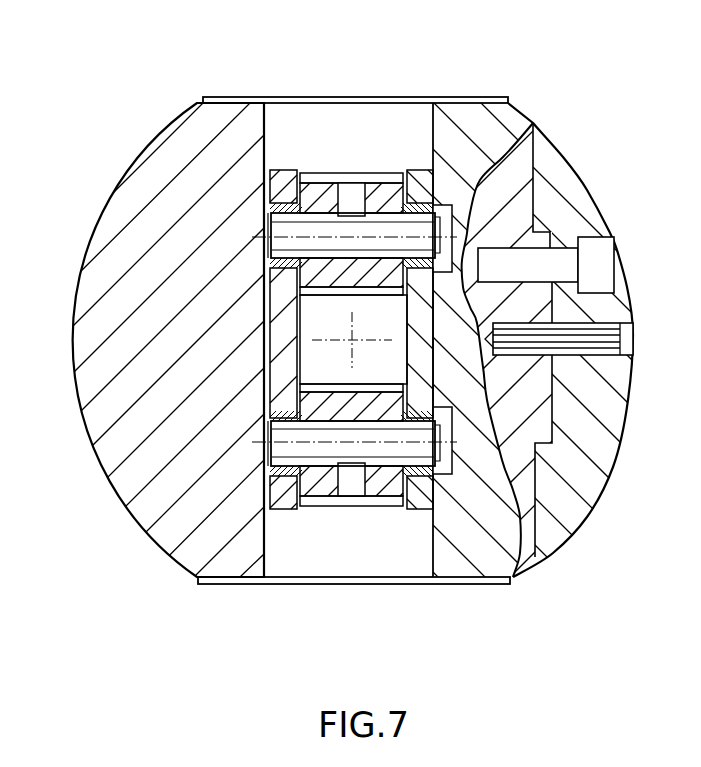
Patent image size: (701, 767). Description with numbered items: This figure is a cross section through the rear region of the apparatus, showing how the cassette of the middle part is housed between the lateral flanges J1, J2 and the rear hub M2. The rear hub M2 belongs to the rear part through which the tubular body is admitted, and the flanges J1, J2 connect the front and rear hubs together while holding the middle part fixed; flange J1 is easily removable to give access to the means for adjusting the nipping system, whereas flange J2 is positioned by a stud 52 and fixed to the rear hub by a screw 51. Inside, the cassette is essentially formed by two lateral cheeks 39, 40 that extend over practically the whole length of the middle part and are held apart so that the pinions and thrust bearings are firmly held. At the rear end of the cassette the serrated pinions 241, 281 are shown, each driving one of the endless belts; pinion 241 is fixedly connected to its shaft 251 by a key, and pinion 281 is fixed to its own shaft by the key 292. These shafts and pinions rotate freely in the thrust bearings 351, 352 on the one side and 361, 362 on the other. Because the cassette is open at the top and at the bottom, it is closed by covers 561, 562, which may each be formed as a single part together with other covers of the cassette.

The cover 561 is at (283, 97).
The cover 562 is at (297, 584).
The thrust bearing 351 is at (280, 203).
The thrust bearing 352 is at (419, 170).
The serrated pinion 241 is at (370, 183).
The shaft 251 is at (267, 231).
The lateral cheek 39 is at (283, 283).
The lateral cheek 40 is at (427, 327).
The thrust bearing 361 is at (287, 413).
The thrust bearing 362 is at (407, 418).
The serrated pinion 281 is at (347, 480).
The key 292 is at (267, 460).
The lateral flange J1 is at (133, 457).
The lateral flange J2 is at (563, 183).
The rear hub M2 is at (637, 483).
The screw 51 is at (598, 253).
The stud 52 is at (610, 341).